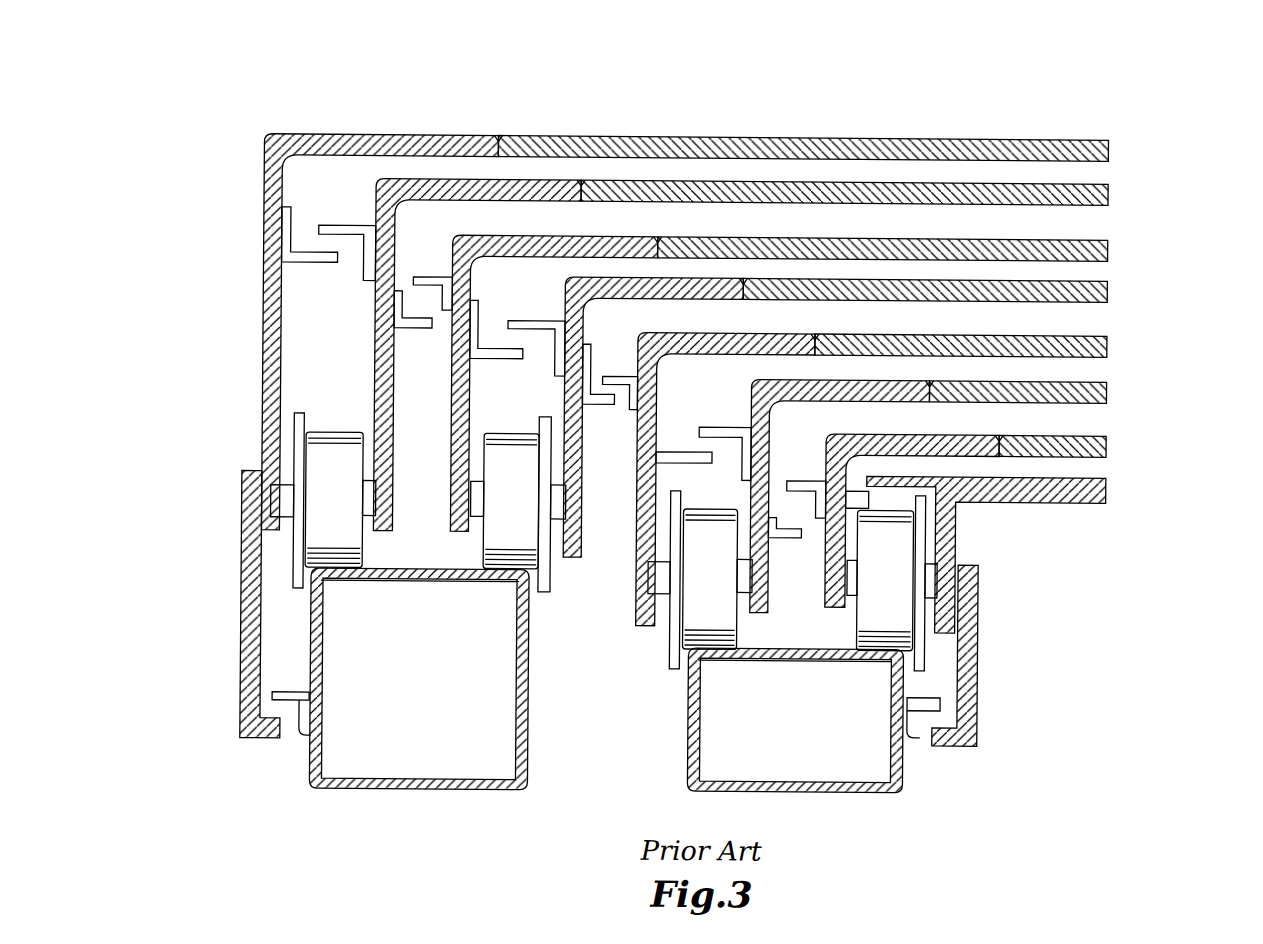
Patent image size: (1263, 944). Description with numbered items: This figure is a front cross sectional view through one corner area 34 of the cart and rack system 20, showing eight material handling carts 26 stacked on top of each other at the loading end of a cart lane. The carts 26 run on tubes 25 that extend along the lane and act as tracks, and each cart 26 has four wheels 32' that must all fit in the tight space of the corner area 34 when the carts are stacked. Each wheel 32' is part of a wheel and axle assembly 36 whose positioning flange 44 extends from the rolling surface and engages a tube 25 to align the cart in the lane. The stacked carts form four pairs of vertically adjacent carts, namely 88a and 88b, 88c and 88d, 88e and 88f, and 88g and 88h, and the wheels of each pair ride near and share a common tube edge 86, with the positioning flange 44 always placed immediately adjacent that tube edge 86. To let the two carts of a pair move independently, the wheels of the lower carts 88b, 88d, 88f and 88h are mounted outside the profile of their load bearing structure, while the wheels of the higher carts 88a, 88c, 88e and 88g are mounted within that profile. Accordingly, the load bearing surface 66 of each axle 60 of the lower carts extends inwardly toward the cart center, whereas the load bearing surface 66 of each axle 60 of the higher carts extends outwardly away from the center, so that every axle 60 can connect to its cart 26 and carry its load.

The cart and rack system 20 is at (338, 100).
The tube 25 is at (414, 793).
The material handling cart 26 is at (985, 475).
The wheel 32' is at (606, 649).
The corner area 34 is at (226, 205).
The wheel and axle assembly 36 is at (478, 542).
The positioning flange 44 is at (305, 416).
The axle 60 is at (366, 500).
The load-bearing surface 66 is at (462, 496).
The tube edge 86 is at (302, 561).
The higher cart of first pair 88a is at (1107, 145).
The lower cart of first pair 88b is at (1107, 189).
The higher cart of second pair 88c is at (1107, 245).
The lower cart of second pair 88d is at (1107, 286).
The higher cart of third pair 88e is at (1107, 341).
The lower cart of third pair 88f is at (1107, 387).
The higher cart of fourth pair 88g is at (1107, 441).
The lower cart of fourth pair 88h is at (1107, 483).